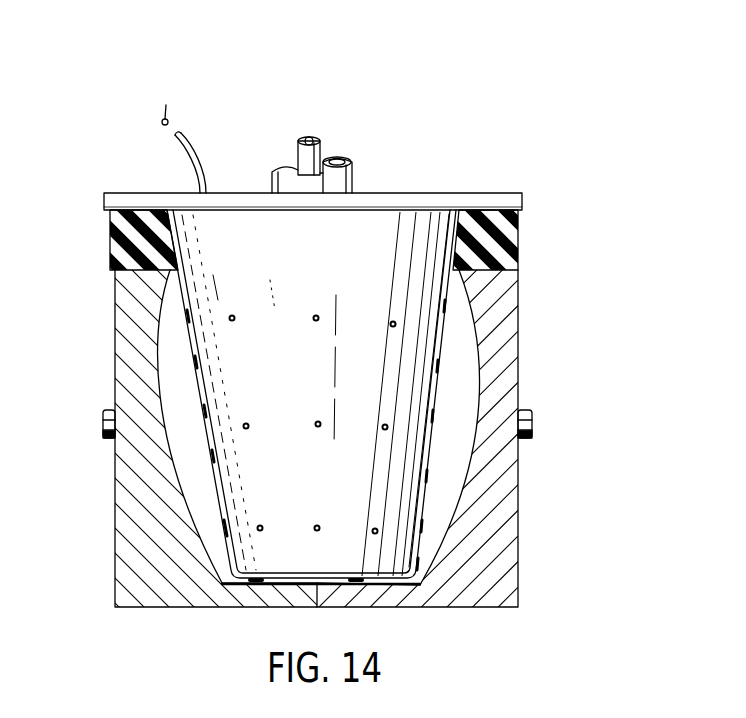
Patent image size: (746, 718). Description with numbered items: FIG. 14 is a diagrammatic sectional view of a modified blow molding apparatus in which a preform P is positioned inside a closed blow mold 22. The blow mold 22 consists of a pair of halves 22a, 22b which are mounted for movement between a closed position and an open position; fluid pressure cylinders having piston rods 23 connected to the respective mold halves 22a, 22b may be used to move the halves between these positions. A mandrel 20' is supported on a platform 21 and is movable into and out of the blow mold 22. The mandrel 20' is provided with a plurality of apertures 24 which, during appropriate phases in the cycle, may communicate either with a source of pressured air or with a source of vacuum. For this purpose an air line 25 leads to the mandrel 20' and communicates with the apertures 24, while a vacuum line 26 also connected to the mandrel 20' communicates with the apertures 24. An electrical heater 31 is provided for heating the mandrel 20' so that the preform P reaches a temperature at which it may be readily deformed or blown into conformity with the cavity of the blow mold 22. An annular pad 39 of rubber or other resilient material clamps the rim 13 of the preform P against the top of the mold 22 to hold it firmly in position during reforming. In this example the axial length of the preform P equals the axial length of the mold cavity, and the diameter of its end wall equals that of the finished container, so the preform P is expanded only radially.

The rim 13 is at (452, 264).
The mandrel 20' is at (311, 397).
The platform 21 is at (455, 194).
The blow mold 22 is at (373, 435).
The mold half 22a is at (115, 597).
The mold half 22b is at (518, 597).
The piston rod 23 is at (103, 410).
The apertures 24 is at (314, 524).
The air line 25 is at (308, 141).
The vacuum line 26 is at (340, 160).
The electrical heater 31 is at (182, 153).
The annular pad 39 is at (521, 232).
The preform P is at (440, 372).